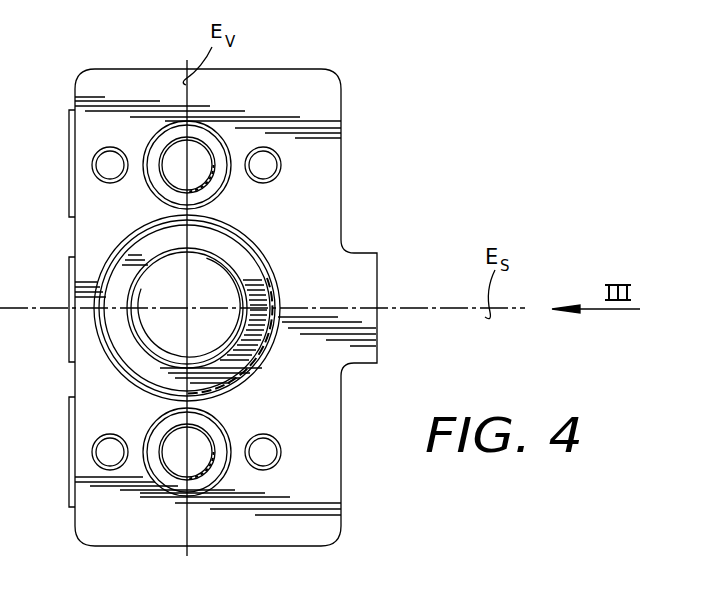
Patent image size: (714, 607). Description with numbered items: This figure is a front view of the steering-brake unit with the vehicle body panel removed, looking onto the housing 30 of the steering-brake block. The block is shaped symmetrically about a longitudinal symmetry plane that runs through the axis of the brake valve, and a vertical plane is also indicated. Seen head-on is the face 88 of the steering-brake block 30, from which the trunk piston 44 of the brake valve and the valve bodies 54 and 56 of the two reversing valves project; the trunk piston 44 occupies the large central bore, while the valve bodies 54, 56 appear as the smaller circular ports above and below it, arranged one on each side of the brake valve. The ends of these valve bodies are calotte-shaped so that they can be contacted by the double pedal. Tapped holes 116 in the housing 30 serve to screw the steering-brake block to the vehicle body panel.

The housing 30 is at (349, 222).
The trunk piston 44 is at (148, 325).
The valve body 54 is at (180, 142).
The valve body 56 is at (175, 437).
The face 88 is at (318, 102).
The tapped holes 116 is at (281, 163).